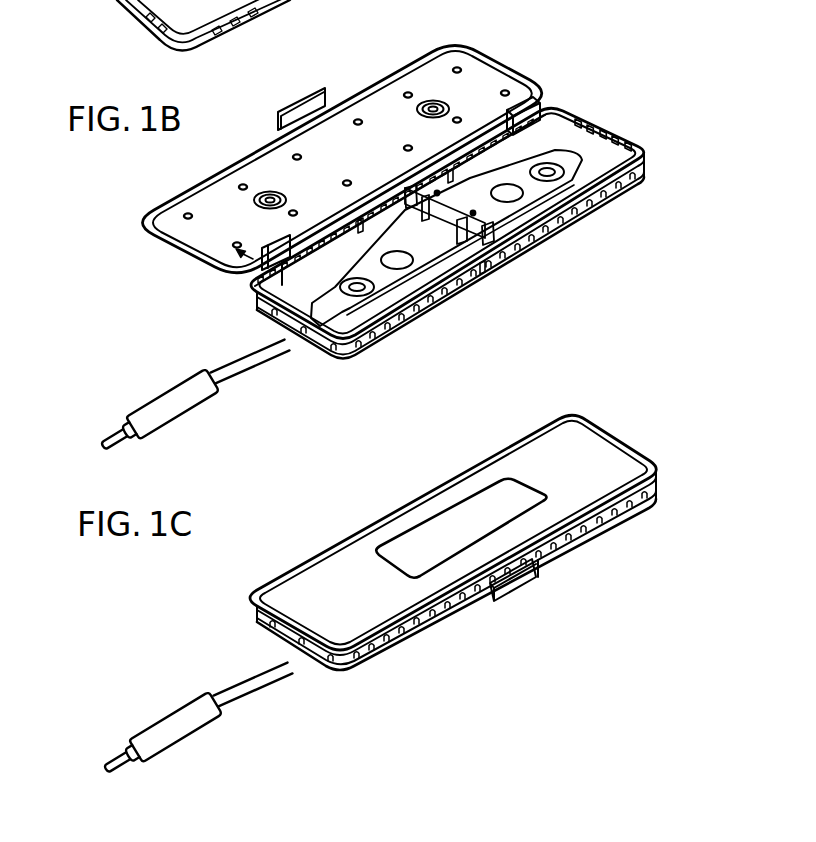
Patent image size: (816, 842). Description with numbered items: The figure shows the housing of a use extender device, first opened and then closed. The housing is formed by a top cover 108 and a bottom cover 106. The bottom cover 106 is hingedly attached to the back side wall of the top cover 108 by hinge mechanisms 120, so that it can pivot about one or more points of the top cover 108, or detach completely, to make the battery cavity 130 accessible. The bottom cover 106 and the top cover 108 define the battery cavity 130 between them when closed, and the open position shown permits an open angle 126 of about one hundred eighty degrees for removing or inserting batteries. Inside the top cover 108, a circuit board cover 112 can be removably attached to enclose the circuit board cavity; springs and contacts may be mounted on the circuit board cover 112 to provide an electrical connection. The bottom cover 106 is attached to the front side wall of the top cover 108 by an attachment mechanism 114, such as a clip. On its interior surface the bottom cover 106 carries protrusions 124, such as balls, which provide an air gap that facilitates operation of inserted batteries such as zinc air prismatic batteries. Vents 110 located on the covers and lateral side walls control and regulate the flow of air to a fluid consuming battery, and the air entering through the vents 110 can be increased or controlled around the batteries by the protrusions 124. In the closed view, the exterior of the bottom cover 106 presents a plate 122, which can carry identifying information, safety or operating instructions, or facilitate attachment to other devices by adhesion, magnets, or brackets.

In FIG. 1B, the bottom cover 106 is at (499, 60).
In FIG. 1B, the top cover 108 is at (568, 104).
In FIG. 1C, the top cover 108 is at (565, 435).
In FIG. 1B, the vents 110 is at (622, 122).
In FIG. 1B, the circuit board cover 112 is at (456, 253).
In FIG. 1C, the attachment mechanism 114 is at (513, 598).
In FIG. 1B, the hinge mechanisms 120 is at (258, 236).
In FIG. 1C, the hinge mechanisms 120 is at (517, 422).
In FIG. 1C, the plate 122 is at (400, 535).
In FIG. 1B, the protrusions 124 is at (184, 206).
In FIG. 1B, the open angle 126 is at (226, 302).
In FIG. 1B, the battery cavity 130 is at (610, 148).